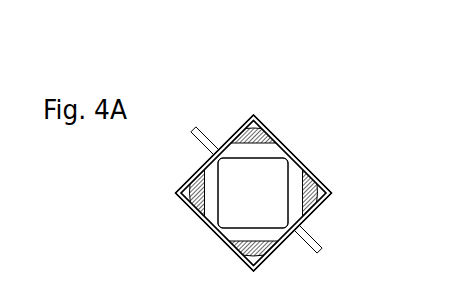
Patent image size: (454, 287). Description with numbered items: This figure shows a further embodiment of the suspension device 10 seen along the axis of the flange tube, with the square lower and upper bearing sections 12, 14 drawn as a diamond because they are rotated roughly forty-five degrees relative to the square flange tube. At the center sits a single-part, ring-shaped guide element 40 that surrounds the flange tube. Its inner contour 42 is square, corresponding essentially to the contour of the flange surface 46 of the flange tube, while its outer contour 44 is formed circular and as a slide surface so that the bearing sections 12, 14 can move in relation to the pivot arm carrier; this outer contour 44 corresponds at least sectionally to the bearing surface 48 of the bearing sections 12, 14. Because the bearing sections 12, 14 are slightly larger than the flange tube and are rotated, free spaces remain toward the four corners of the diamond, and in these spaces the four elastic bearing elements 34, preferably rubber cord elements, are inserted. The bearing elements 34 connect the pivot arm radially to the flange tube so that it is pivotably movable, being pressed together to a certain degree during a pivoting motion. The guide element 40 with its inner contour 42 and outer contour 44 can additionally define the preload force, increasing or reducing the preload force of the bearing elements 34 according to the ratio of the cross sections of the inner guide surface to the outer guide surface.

The suspension device 10 is at (252, 99).
The lower bearing section 12 is at (185, 201).
The upper bearing section 14 is at (204, 193).
The elastic bearing element 34 is at (260, 136).
The guide element 40 is at (238, 150).
The inner contour 42 is at (287, 177).
The outer contour 44 is at (307, 192).
The flange surface 46 is at (281, 168).
The bearing surface 48 is at (232, 238).